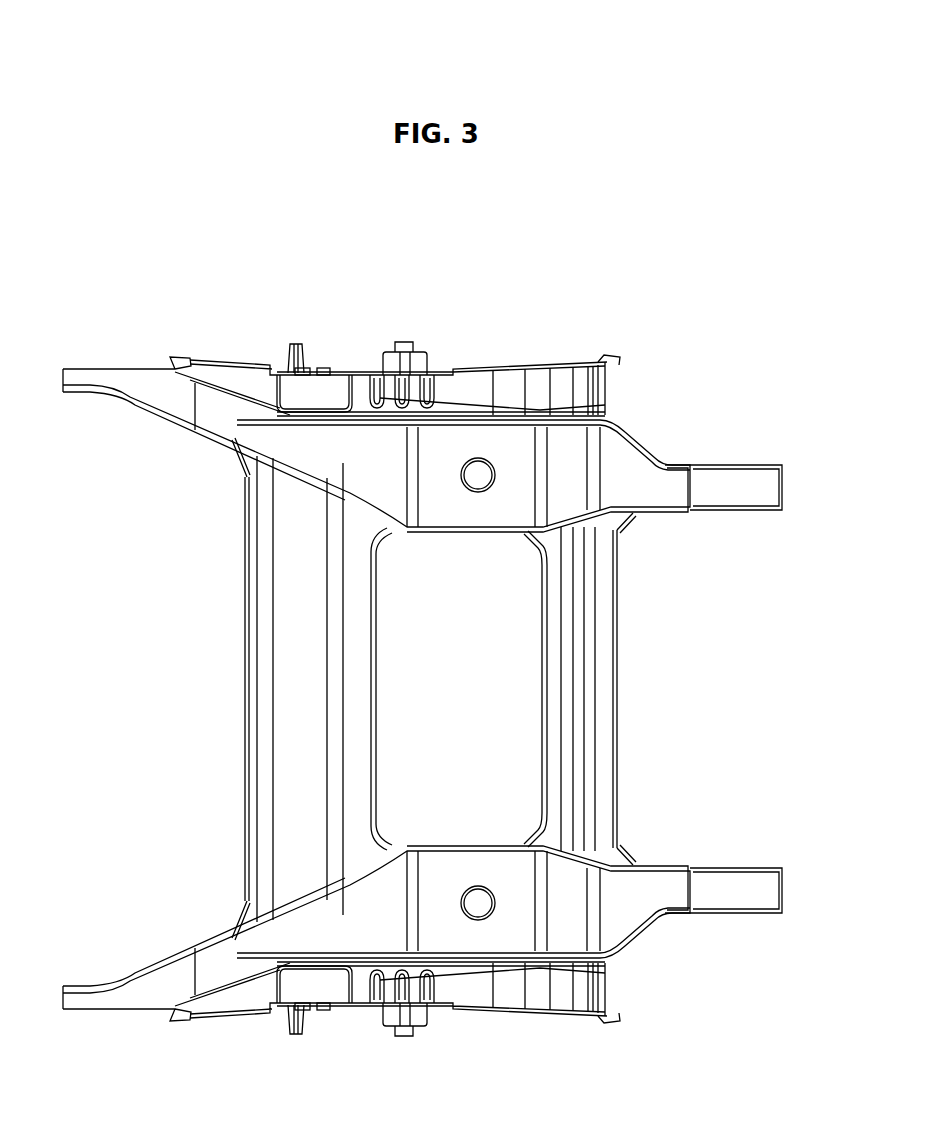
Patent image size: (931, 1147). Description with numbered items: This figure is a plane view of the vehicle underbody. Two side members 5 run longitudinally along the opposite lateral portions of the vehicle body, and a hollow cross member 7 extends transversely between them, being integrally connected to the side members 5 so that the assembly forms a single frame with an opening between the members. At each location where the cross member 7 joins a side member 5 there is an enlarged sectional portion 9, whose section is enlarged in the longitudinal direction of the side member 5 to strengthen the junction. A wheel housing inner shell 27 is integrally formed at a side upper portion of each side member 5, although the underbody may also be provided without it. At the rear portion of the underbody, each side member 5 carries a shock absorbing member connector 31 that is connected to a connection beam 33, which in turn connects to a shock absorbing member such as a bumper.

The side member 5 is at (633, 440).
The cross member 7 is at (335, 703).
The enlarged sectional portion 9 is at (237, 462).
The wheel housing inner shell 27 is at (485, 385).
The shock absorbing member connector 31 is at (678, 483).
The connection beam 33 is at (750, 477).